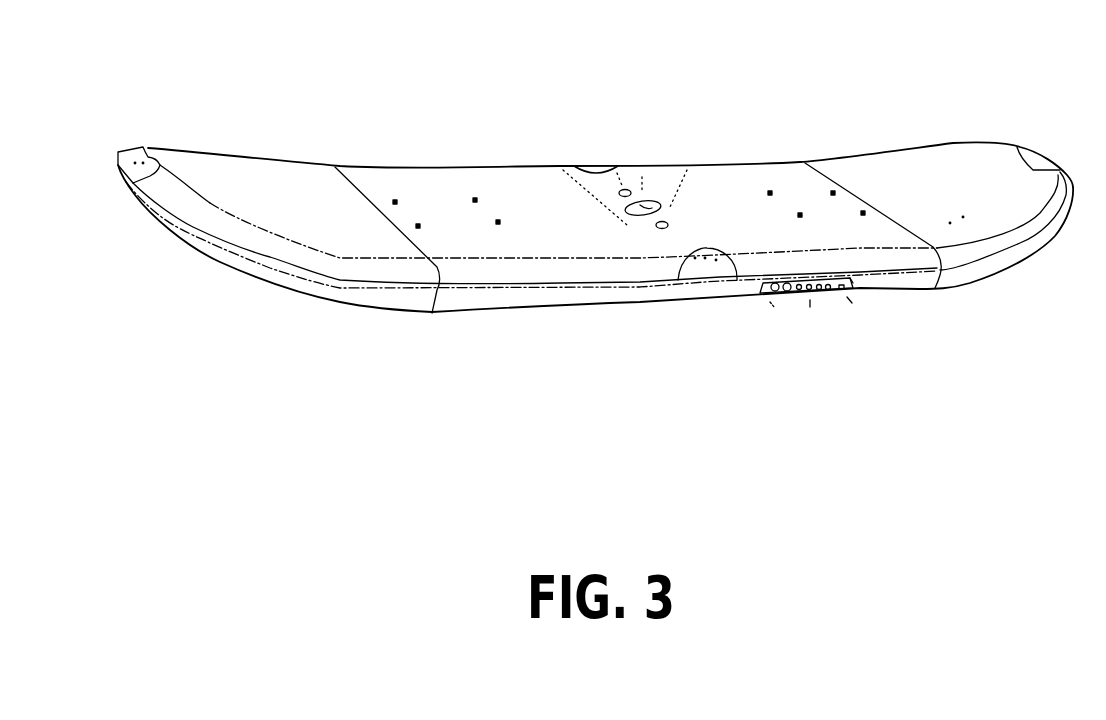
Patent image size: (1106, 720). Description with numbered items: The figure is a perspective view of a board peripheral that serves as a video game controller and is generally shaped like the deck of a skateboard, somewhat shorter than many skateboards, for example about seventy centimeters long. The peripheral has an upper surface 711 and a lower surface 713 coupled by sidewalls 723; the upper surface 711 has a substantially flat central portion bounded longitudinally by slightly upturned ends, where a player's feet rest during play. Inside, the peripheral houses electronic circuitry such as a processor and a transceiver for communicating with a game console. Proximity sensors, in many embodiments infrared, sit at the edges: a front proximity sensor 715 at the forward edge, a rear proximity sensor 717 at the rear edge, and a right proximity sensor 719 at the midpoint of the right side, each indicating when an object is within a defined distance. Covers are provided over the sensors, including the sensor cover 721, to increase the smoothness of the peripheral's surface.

The upper surface 711 is at (435, 207).
The lower surface 713 is at (434, 358).
The front proximity sensor 715 is at (118, 172).
The rear proximity sensor 717 is at (1047, 157).
The right proximity sensor 719 is at (703, 278).
The sensor notch 721 is at (580, 163).
The sidewalls 723 is at (593, 297).